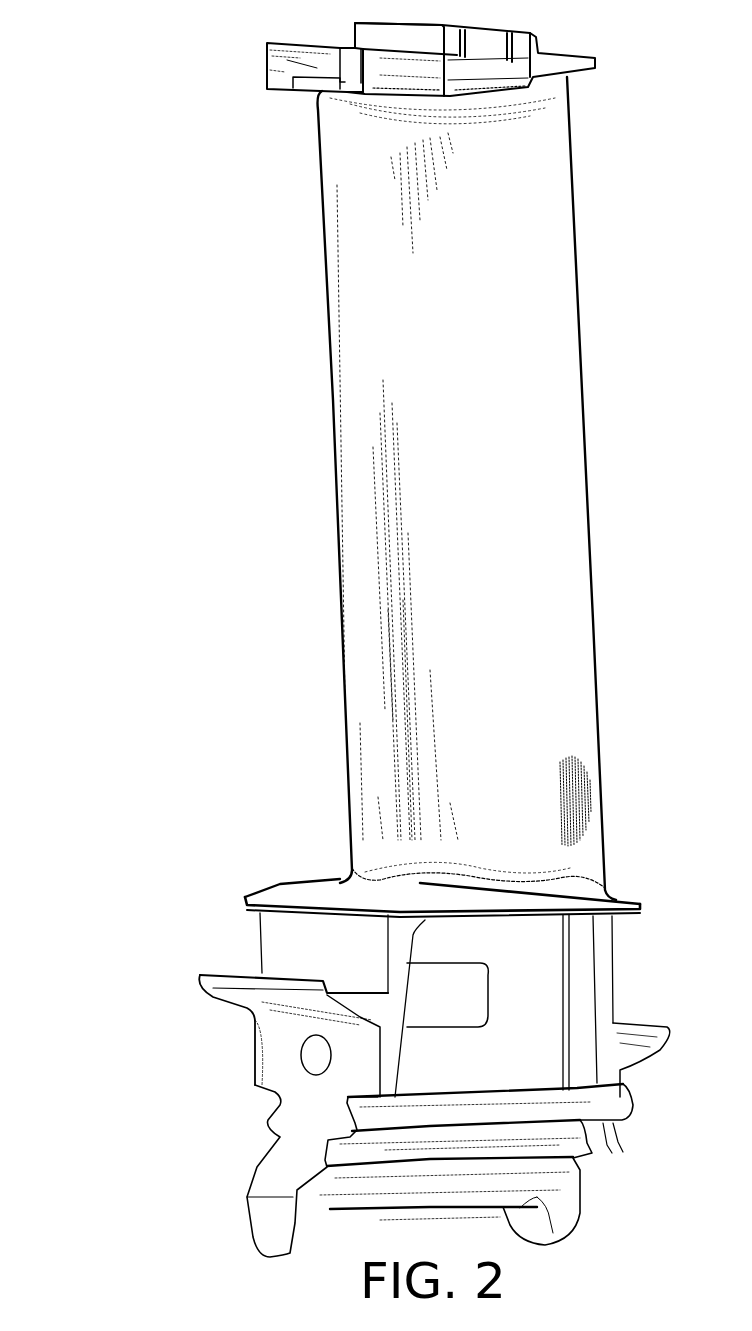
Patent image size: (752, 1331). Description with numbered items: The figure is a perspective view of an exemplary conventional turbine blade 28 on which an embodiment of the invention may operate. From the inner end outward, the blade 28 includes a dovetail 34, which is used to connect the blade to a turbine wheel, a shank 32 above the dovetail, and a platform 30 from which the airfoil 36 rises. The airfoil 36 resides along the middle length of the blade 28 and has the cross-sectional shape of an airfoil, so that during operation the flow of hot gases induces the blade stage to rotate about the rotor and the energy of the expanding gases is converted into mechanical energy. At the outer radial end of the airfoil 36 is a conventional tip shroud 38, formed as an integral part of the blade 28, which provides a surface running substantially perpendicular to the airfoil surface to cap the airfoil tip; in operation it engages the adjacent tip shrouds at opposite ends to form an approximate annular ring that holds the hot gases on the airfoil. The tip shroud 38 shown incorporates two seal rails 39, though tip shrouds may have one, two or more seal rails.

The turbine blade 28 is at (102, 195).
The platform 30 is at (318, 893).
The shank 32 is at (290, 1033).
The dovetail 34 is at (272, 1212).
The airfoil 36 is at (205, 898).
The tip shroud 38 is at (588, 30).
The seal rails 39 is at (268, 60).